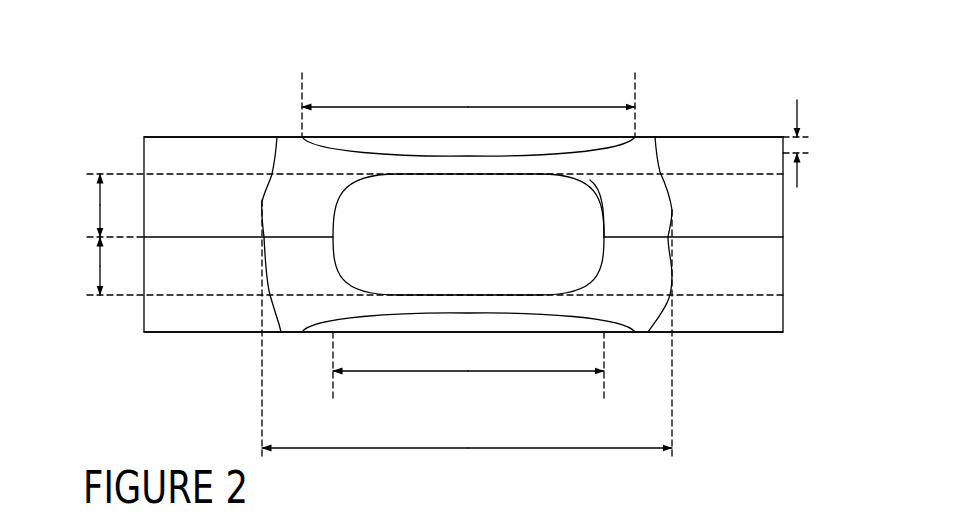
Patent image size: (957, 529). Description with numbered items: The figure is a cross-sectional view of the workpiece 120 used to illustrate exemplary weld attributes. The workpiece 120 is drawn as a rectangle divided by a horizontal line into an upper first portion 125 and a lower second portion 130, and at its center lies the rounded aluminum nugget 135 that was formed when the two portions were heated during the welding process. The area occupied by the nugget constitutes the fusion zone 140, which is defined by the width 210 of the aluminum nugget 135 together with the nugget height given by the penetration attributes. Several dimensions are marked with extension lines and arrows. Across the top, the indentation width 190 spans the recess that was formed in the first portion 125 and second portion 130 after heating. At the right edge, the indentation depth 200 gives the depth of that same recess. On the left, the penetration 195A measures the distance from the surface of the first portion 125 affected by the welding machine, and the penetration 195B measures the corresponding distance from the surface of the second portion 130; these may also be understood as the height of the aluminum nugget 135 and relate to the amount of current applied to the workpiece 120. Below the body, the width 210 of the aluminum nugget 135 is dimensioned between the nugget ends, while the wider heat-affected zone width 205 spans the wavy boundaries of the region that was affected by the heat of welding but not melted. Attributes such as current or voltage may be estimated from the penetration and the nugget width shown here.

The workpiece 120 is at (728, 100).
The first portion 125 is at (247, 136).
The second portion 130 is at (143, 322).
The aluminum nugget 135 is at (605, 227).
The fusion zone 140 is at (331, 224).
The indentation width 190 is at (463, 107).
The penetration 195A is at (98, 195).
The penetration 195B is at (98, 265).
The indentation depth 200 is at (815, 147).
The heat-affected zone width 205 is at (425, 448).
The width of the aluminum nugget 210 is at (455, 371).